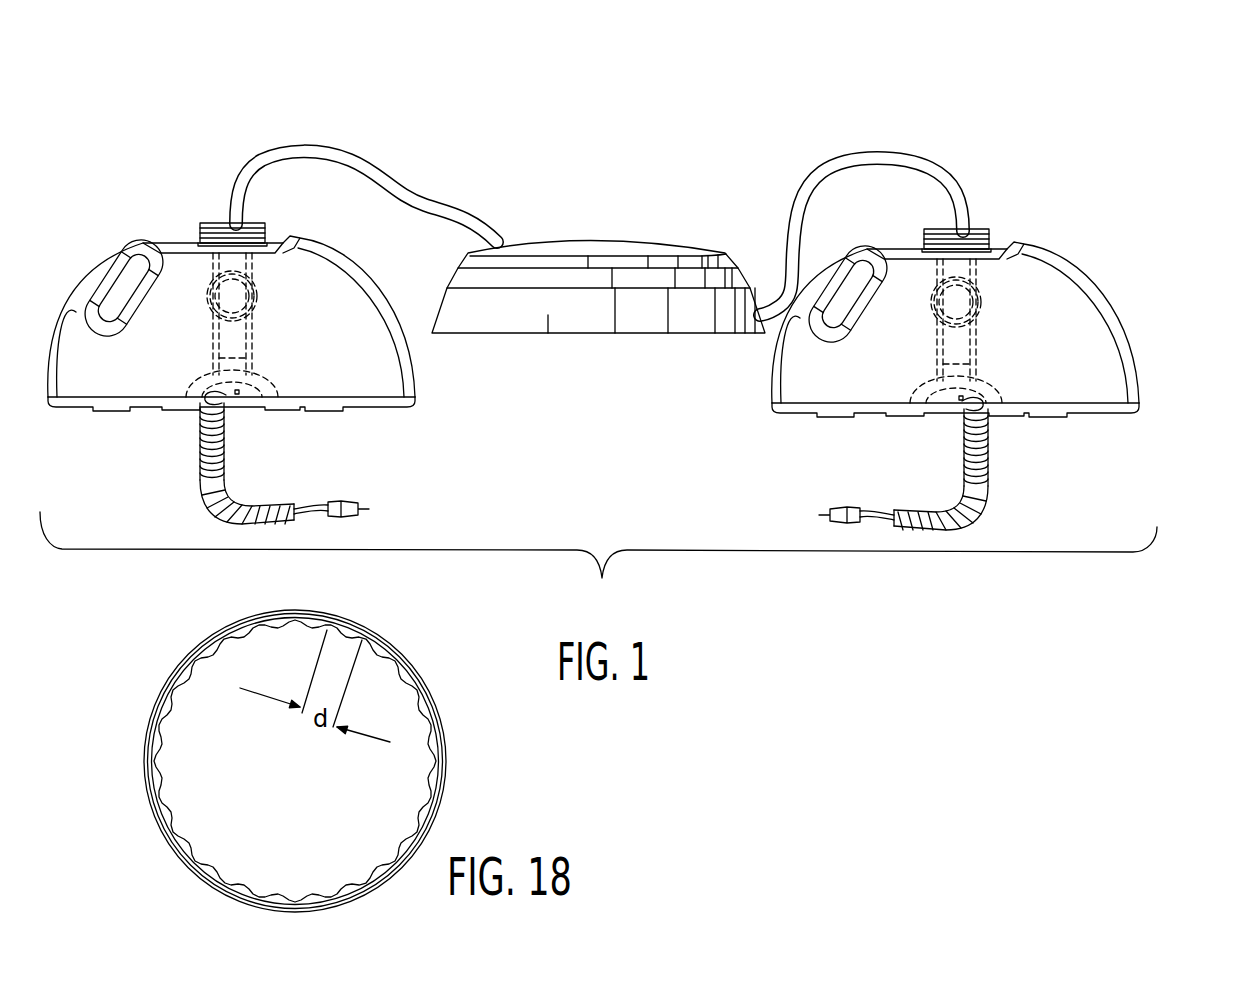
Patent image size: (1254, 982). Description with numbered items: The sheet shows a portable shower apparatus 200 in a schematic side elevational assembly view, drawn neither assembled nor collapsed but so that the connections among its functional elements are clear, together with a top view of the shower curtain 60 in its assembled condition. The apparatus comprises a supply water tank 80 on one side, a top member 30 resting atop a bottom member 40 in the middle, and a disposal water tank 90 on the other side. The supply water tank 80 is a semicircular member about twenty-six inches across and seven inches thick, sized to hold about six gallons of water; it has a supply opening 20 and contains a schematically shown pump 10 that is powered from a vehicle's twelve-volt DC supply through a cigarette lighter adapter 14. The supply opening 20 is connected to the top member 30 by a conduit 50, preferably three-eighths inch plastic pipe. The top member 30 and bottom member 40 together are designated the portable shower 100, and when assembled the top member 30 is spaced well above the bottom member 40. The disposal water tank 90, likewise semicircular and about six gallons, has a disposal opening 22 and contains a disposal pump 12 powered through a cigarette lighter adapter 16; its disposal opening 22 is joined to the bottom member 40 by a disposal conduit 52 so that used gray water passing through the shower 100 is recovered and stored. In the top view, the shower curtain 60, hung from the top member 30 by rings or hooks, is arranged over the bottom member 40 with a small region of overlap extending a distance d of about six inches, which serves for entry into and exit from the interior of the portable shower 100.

In FIG. 1, the pump 10 is at (258, 291).
In FIG. 1, the disposal pump 12 is at (983, 297).
In FIG. 1, the cigarette lighter adapter 14 is at (190, 480).
In FIG. 1, the cigarette lighter adapter 16 is at (997, 494).
In FIG. 1, the supply opening 20 is at (207, 222).
In FIG. 1, the disposal opening 22 is at (981, 230).
In FIG. 1, the top member 30 is at (563, 258).
In FIG. 1, the bottom member 40 is at (598, 316).
In FIG. 18, the bottom member 40 is at (177, 657).
In FIG. 1, the conduit 50 is at (287, 150).
In FIG. 1, the disposal conduit 52 is at (922, 162).
In FIG. 18, the shower curtain 60 is at (160, 767).
In FIG. 1, the supply water tank 80 is at (88, 277).
In FIG. 1, the disposal water tank 90 is at (1130, 323).
In FIG. 1, the portable shower 100 is at (608, 269).
In FIG. 1, the portable shower apparatus 200 is at (670, 145).